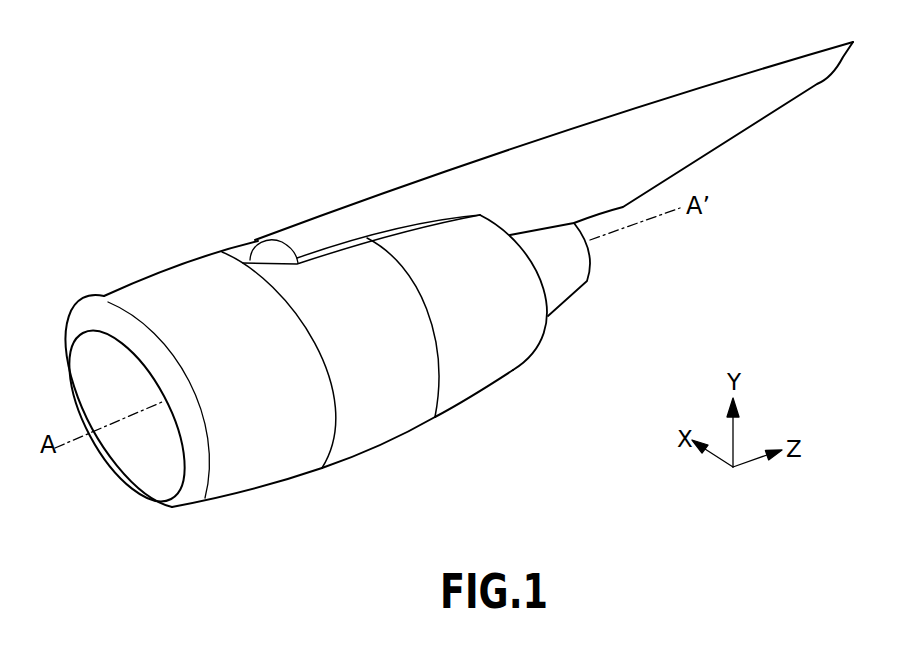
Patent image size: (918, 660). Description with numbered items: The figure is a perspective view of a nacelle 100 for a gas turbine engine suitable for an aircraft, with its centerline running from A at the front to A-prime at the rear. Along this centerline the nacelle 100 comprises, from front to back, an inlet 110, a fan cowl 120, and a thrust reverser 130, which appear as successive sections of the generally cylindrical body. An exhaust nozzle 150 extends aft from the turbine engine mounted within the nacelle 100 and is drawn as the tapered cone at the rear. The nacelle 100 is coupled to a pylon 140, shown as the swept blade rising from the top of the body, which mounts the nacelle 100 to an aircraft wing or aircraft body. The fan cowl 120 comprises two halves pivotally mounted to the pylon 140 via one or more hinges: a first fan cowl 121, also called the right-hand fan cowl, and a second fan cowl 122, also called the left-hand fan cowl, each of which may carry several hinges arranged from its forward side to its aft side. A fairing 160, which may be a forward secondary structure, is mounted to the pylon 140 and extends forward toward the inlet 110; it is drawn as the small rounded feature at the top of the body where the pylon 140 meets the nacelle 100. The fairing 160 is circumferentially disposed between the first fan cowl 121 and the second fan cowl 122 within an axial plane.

The nacelle 100 is at (167, 100).
The inlet 110 is at (143, 305).
The fan cowl 120 is at (412, 412).
The first fan cowl 121 is at (232, 259).
The second fan cowl 122 is at (357, 428).
The thrust reverser 130 is at (490, 363).
The pylon 140 is at (490, 168).
The exhaust nozzle 150 is at (570, 273).
The fairing 160 is at (262, 250).